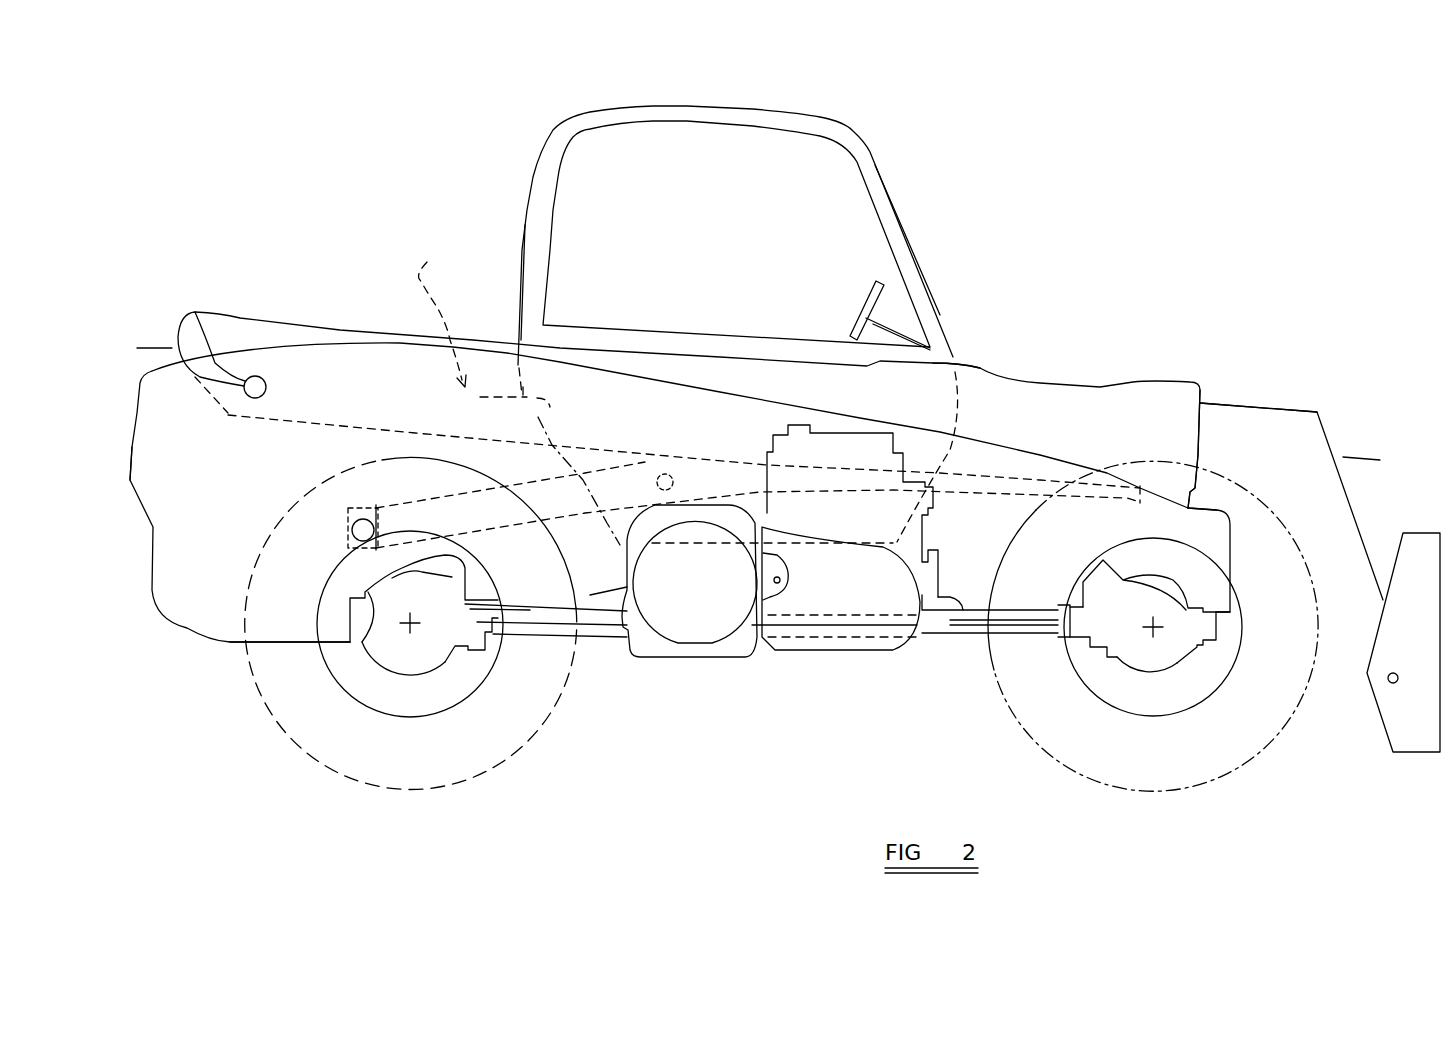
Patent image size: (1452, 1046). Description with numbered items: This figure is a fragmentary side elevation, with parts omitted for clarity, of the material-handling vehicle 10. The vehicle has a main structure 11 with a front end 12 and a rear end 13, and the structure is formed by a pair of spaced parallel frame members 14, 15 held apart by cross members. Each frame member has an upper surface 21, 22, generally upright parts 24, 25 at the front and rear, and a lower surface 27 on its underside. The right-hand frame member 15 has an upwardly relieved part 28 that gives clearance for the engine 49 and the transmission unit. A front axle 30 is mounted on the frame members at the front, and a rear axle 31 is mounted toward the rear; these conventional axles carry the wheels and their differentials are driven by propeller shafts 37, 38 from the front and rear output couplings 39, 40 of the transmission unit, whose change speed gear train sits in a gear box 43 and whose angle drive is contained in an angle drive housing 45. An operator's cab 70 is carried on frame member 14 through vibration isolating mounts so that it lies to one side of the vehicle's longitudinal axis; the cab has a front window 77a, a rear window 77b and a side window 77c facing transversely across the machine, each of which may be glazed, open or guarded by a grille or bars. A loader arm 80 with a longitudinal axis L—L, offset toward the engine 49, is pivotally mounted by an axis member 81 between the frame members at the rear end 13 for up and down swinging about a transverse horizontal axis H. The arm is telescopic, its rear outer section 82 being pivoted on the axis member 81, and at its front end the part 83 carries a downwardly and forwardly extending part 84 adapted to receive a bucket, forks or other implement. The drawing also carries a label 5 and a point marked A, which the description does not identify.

The material-handling vehicle 10 is at (437, 185).
The operator's cab 70 is at (888, 197).
The front window 77a is at (937, 300).
The rear window 77b is at (524, 225).
The side window 77c is at (750, 235).
The mirror 5 is at (887, 283).
The loader arm 80 is at (1100, 387).
The axis member 81 is at (195, 312).
The transverse horizontal axis H is at (248, 377).
The rear outer section 82 is at (340, 334).
The frame member 14 is at (442, 318).
The upper surface 21 is at (497, 395).
The right-hand frame member 15 is at (1045, 455).
The upper surface 22 is at (1036, 510).
The front end 12 is at (1262, 387).
The front part of loader arm 83 is at (1300, 407).
The longitudinal axis of loader arm L is at (765, 400).
The main structure 11 is at (152, 371).
The downwardly and forwardly extending part 84 is at (1362, 540).
The upright part 25 is at (130, 480).
The rear end 13 is at (140, 627).
The lower surface 27 is at (297, 642).
The rear axle 31 is at (415, 655).
The propeller shaft 38 is at (582, 642).
The rear output coupling 40 is at (614, 648).
The gear box 43 is at (667, 663).
The angle drive housing 45 is at (718, 648).
The front output coupling 39 is at (756, 661).
The engine 49 is at (863, 655).
The upwardly relieved part 28 is at (895, 645).
The propeller shaft 37 is at (962, 630).
The upright part 24 is at (1232, 553).
The front axle 30 is at (1160, 660).
The point A is at (651, 487).